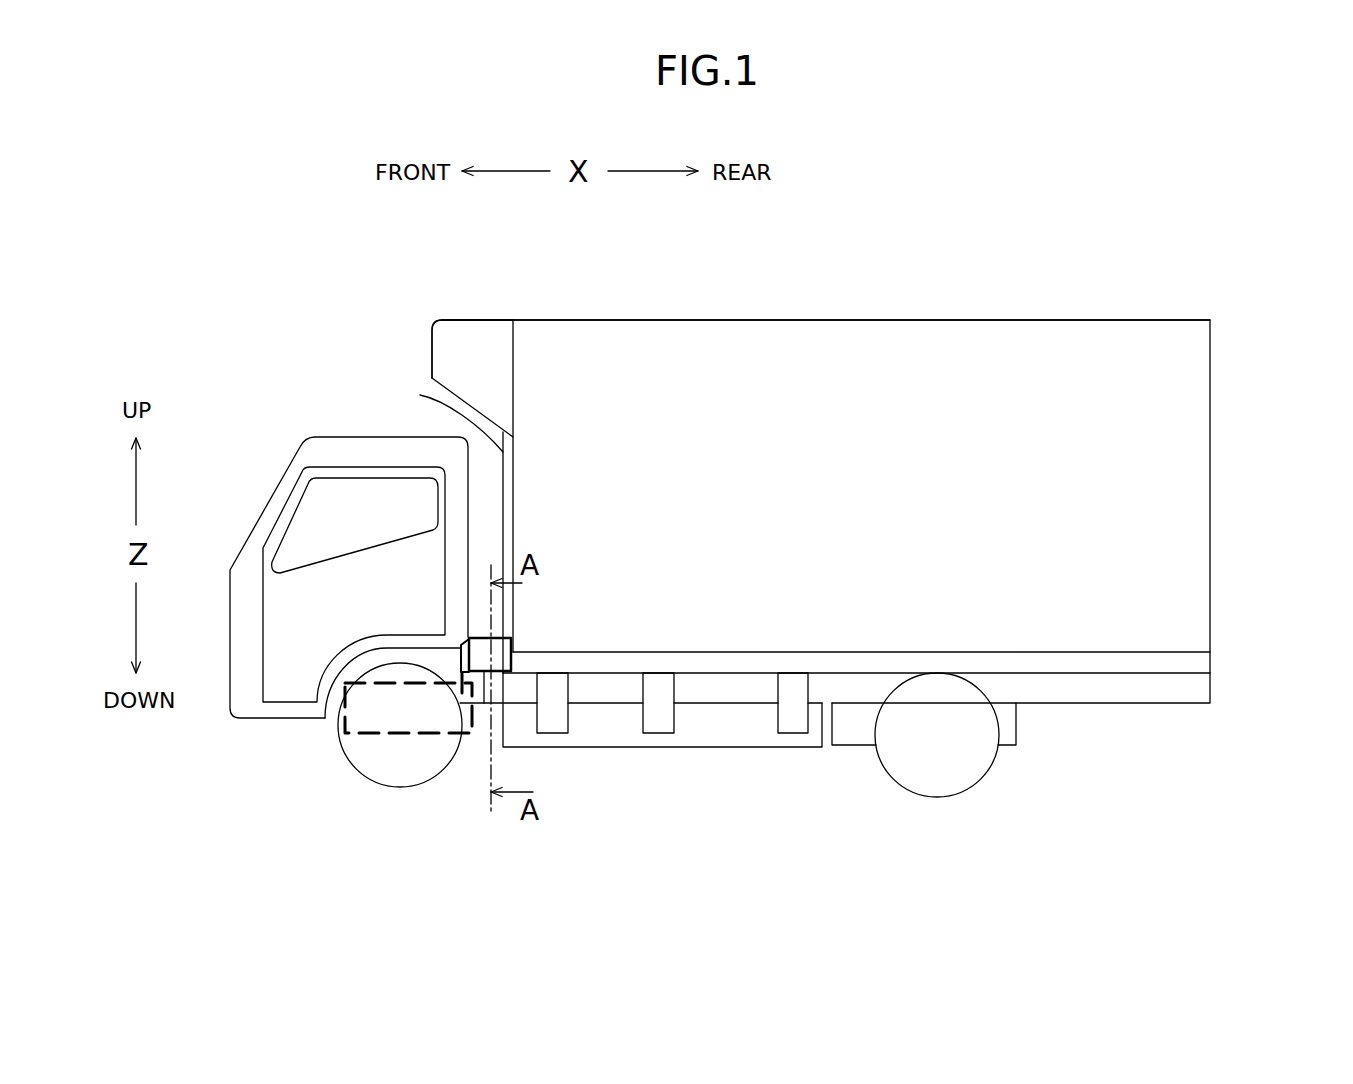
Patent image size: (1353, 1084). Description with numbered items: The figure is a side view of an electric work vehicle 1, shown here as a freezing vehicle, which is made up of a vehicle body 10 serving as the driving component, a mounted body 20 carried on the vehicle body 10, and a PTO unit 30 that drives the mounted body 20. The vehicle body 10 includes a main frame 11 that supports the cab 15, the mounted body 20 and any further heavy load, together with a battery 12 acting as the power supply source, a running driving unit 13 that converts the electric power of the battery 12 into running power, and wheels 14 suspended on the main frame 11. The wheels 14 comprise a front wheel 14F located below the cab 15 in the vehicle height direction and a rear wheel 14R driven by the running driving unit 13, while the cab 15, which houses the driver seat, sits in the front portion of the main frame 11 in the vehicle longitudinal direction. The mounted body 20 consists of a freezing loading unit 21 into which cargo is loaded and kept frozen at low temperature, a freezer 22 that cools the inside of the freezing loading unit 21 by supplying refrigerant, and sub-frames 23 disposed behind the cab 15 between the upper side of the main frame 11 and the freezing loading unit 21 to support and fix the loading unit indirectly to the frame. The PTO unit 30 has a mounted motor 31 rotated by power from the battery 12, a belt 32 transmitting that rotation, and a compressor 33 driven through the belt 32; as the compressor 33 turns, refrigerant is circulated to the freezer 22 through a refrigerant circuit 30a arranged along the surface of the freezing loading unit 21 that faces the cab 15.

The electric work vehicle 1 is at (337, 302).
The vehicle body 10 is at (617, 822).
The main frame 11 is at (1155, 703).
The battery 12 is at (717, 747).
The running driving unit 13 is at (857, 745).
The wheels 14 is at (606, 773).
The front wheel 14F is at (342, 747).
The rear wheel 14R is at (950, 798).
The cab 15 is at (333, 434).
The mounted body 20 is at (923, 290).
The freezing loading unit 21 is at (785, 318).
The freezer 22 is at (470, 318).
The sub-frames 23 is at (1213, 657).
The PTO unit 30 is at (497, 863).
The refrigerant circuit 30a is at (429, 411).
The mounted motor 31 is at (407, 732).
The belt 32 is at (462, 733).
The compressor 33 is at (484, 703).